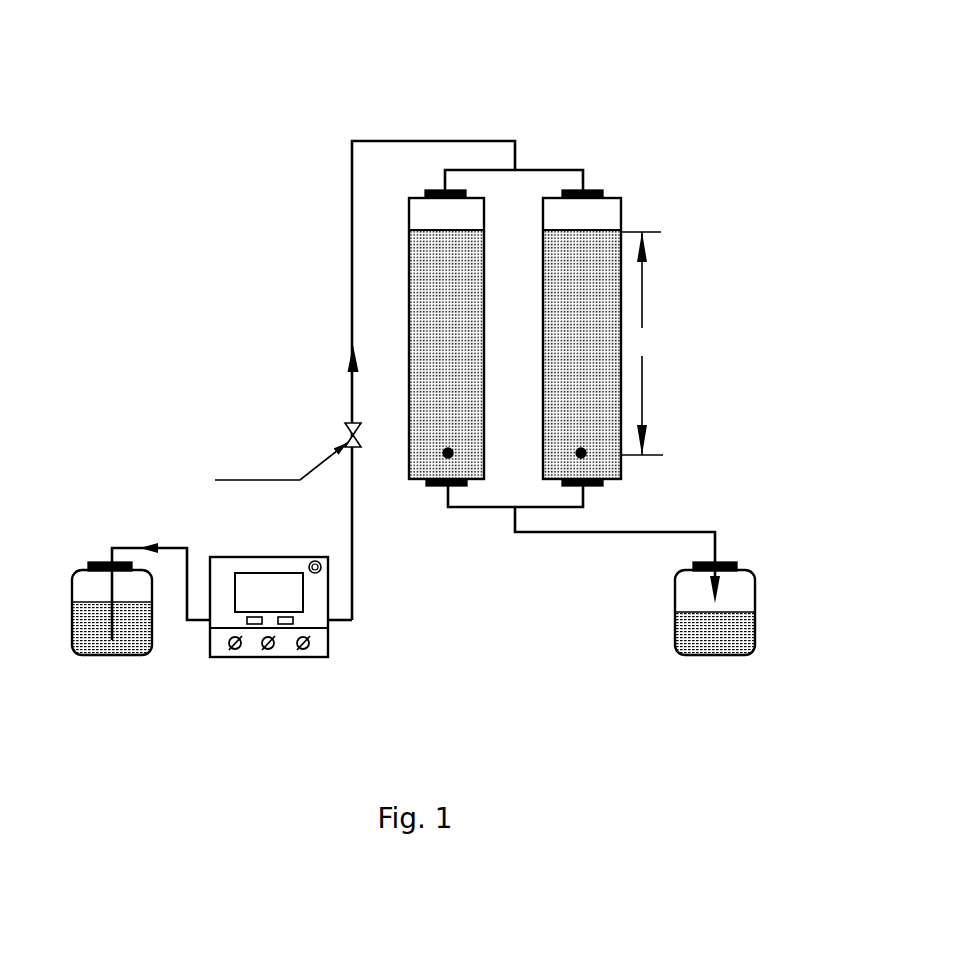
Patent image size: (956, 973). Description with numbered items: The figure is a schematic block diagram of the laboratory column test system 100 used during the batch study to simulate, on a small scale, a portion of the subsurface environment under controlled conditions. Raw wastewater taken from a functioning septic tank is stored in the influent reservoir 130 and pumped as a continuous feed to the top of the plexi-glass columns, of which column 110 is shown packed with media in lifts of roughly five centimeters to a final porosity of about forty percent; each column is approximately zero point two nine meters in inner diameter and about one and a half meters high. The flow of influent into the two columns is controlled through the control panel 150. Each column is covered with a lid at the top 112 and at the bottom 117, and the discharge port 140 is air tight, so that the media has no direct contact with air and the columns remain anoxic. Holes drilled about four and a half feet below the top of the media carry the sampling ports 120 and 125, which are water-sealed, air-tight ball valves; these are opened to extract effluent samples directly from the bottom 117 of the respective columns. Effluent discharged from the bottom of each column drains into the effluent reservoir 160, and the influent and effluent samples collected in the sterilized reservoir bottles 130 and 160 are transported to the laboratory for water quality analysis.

The column test system 100 is at (421, 380).
The plexi-glass column 110 is at (432, 218).
The top lid 112 is at (432, 183).
The bottom lid 117 is at (467, 486).
The sampling port 120 is at (446, 457).
The sampling port 125 is at (590, 460).
The influent reservoir 130 is at (78, 598).
The discharge port 140 is at (533, 534).
The control panel 150 is at (285, 665).
The effluent reservoir 160 is at (752, 578).